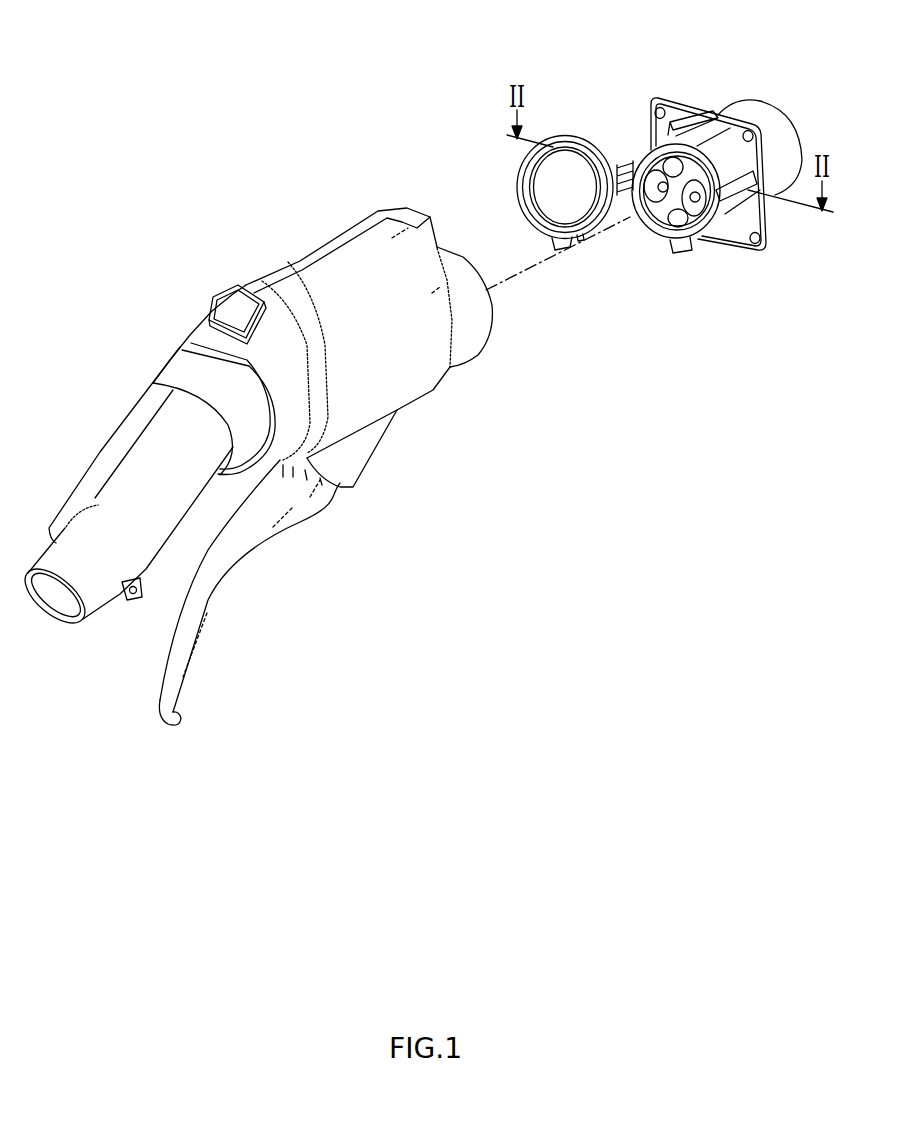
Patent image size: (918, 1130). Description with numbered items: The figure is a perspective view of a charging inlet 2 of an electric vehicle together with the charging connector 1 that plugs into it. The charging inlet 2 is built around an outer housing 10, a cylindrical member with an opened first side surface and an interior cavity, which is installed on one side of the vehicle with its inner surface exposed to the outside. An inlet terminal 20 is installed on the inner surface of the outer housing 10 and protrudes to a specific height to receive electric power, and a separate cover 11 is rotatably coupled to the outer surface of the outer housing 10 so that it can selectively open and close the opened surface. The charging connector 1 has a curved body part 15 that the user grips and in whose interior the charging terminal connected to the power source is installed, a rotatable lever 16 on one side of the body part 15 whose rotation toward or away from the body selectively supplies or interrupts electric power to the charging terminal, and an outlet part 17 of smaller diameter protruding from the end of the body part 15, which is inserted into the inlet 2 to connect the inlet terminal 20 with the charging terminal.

The charging connector 1 is at (196, 201).
The charging inlet 2 is at (692, 98).
The outer housing 10 is at (727, 150).
The cover 11 is at (568, 178).
The body part 15 is at (328, 277).
The rotatable lever 16 is at (225, 568).
The outlet part 17 is at (468, 310).
The inlet terminal 20 is at (702, 199).